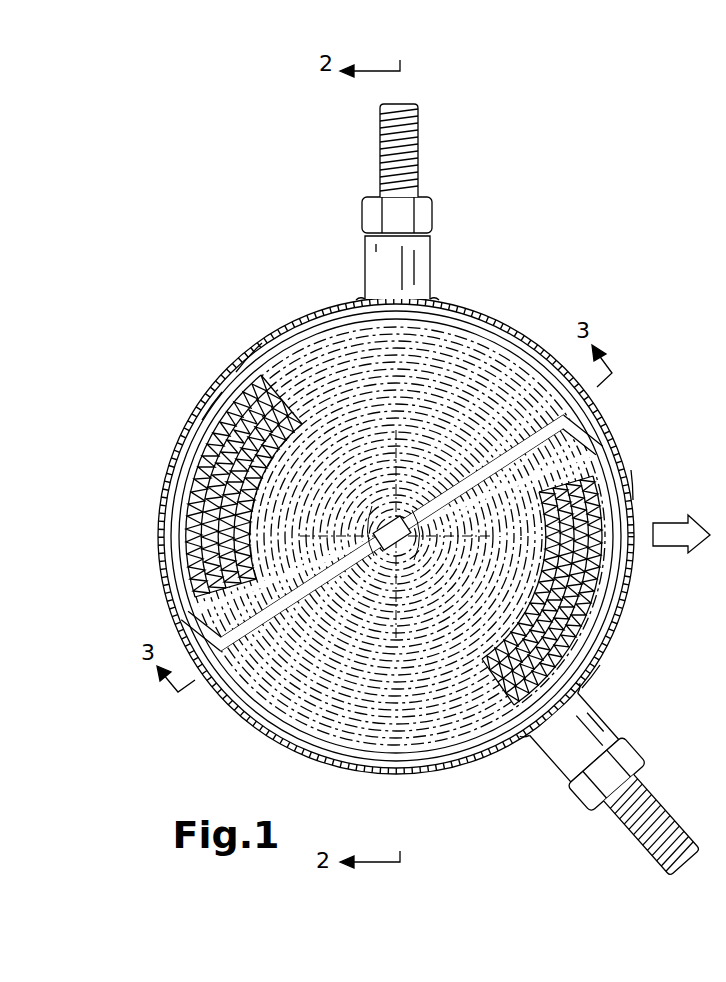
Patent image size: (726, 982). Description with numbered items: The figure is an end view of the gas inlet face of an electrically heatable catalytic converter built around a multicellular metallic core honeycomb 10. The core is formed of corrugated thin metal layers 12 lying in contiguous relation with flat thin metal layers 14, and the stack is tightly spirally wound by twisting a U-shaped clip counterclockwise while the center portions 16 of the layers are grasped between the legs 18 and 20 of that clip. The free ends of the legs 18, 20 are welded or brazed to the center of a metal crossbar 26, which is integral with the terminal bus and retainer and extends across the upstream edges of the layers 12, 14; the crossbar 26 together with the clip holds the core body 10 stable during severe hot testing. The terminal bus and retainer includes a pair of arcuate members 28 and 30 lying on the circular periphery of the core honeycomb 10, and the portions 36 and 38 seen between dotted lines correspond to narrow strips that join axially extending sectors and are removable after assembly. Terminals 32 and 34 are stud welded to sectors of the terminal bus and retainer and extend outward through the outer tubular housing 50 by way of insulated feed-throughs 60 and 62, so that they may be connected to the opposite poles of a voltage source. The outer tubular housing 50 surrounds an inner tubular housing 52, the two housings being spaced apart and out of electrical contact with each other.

The multicellular metallic core honeycomb 10 is at (478, 364).
The corrugated thin metal layers 12 is at (192, 537).
The flat thin metal layers 14 is at (193, 530).
The center portions 16 is at (404, 520).
The leg of U-shaped clip 18 is at (420, 548).
The leg of U-shaped clip 20 is at (384, 522).
The metal crossbar 26 is at (266, 686).
The arcuate member 28 is at (626, 485).
The arcuate member 30 is at (248, 364).
The terminal 32 is at (408, 150).
The terminal 34 is at (643, 806).
The portion between dotted lines 36 is at (213, 405).
The portion between dotted lines 38 is at (590, 667).
The outer tubular housing 50 is at (471, 300).
The inner tubular housing 52 is at (516, 350).
The insulated feed-through 60 is at (410, 264).
The insulated feed-through 62 is at (542, 766).